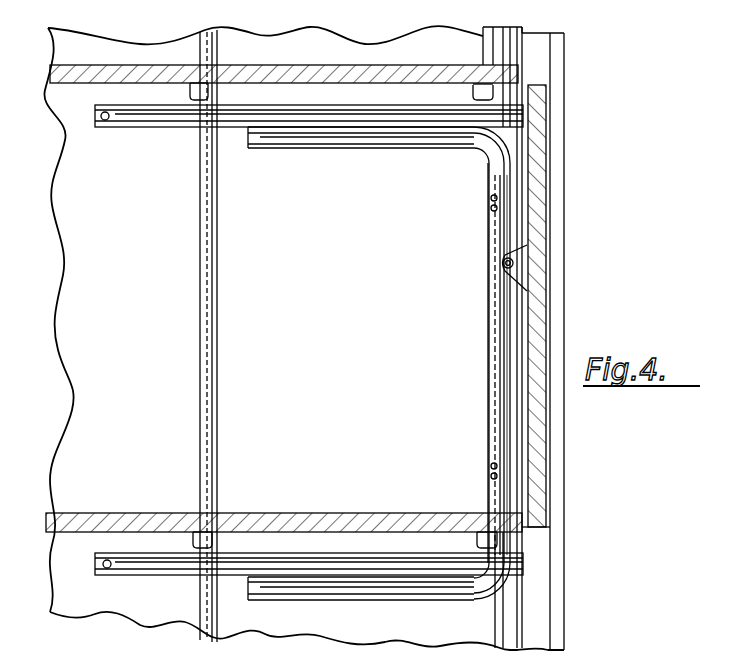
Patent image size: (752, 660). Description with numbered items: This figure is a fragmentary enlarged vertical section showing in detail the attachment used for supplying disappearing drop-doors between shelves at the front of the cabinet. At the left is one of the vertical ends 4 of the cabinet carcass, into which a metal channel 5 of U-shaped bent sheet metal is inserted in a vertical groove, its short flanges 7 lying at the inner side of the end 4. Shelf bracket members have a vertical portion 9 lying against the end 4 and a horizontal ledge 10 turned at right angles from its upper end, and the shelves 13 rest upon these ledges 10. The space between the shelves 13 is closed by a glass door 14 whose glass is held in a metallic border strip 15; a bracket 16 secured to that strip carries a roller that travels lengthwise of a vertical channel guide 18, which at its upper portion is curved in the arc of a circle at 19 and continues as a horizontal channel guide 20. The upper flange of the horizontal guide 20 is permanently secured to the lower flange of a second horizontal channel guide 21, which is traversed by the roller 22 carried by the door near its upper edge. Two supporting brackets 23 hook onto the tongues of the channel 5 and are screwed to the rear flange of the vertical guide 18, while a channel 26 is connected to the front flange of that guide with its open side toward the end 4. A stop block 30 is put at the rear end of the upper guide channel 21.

The end 4 is at (56, 205).
The channel 5 is at (216, 292).
The flange 7 is at (218, 428).
The vertical portion 9 is at (208, 94).
The horizontal ledge 10 is at (194, 84).
The shelf 13 is at (280, 74).
The glass door 14 is at (545, 297).
The metallic border strip 15 is at (545, 237).
The bracket 16 is at (516, 263).
The channel guide 18 is at (506, 235).
The curved portion 19 is at (498, 150).
The horizontal channel guide 20 is at (357, 138).
The horizontal channel guide 21 is at (318, 115).
The roller 22 is at (540, 115).
The bracket 23 is at (490, 202).
The channel 26 is at (540, 605).
The stop block 30 is at (105, 121).